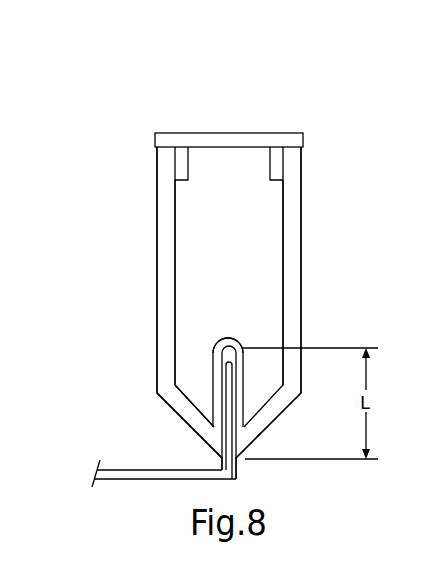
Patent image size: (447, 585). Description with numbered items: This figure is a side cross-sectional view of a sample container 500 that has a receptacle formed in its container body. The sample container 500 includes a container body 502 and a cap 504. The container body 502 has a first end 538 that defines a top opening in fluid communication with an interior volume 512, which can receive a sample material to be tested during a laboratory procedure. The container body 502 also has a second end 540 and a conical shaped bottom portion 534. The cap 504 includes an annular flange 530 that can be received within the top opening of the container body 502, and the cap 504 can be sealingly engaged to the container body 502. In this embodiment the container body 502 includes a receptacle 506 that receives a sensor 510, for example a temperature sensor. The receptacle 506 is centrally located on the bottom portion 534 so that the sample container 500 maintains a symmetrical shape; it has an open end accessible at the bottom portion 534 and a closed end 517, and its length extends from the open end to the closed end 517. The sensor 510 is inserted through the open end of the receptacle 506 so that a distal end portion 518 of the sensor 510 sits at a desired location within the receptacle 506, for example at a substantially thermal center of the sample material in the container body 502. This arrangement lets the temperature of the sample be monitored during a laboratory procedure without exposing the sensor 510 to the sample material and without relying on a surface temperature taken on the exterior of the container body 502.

The sample container 500 is at (292, 90).
The container body 502 is at (305, 251).
The cap 504 is at (162, 129).
The receptacle 506 is at (227, 352).
The sensor 510 is at (130, 470).
The interior volume 512 is at (185, 272).
The closed end 517 is at (241, 336).
The distal end portion 518 is at (228, 372).
The annular flange 530 is at (167, 152).
The conical shaped bottom portion 534 is at (158, 397).
The first end 538 is at (302, 155).
The second end 540 is at (222, 455).